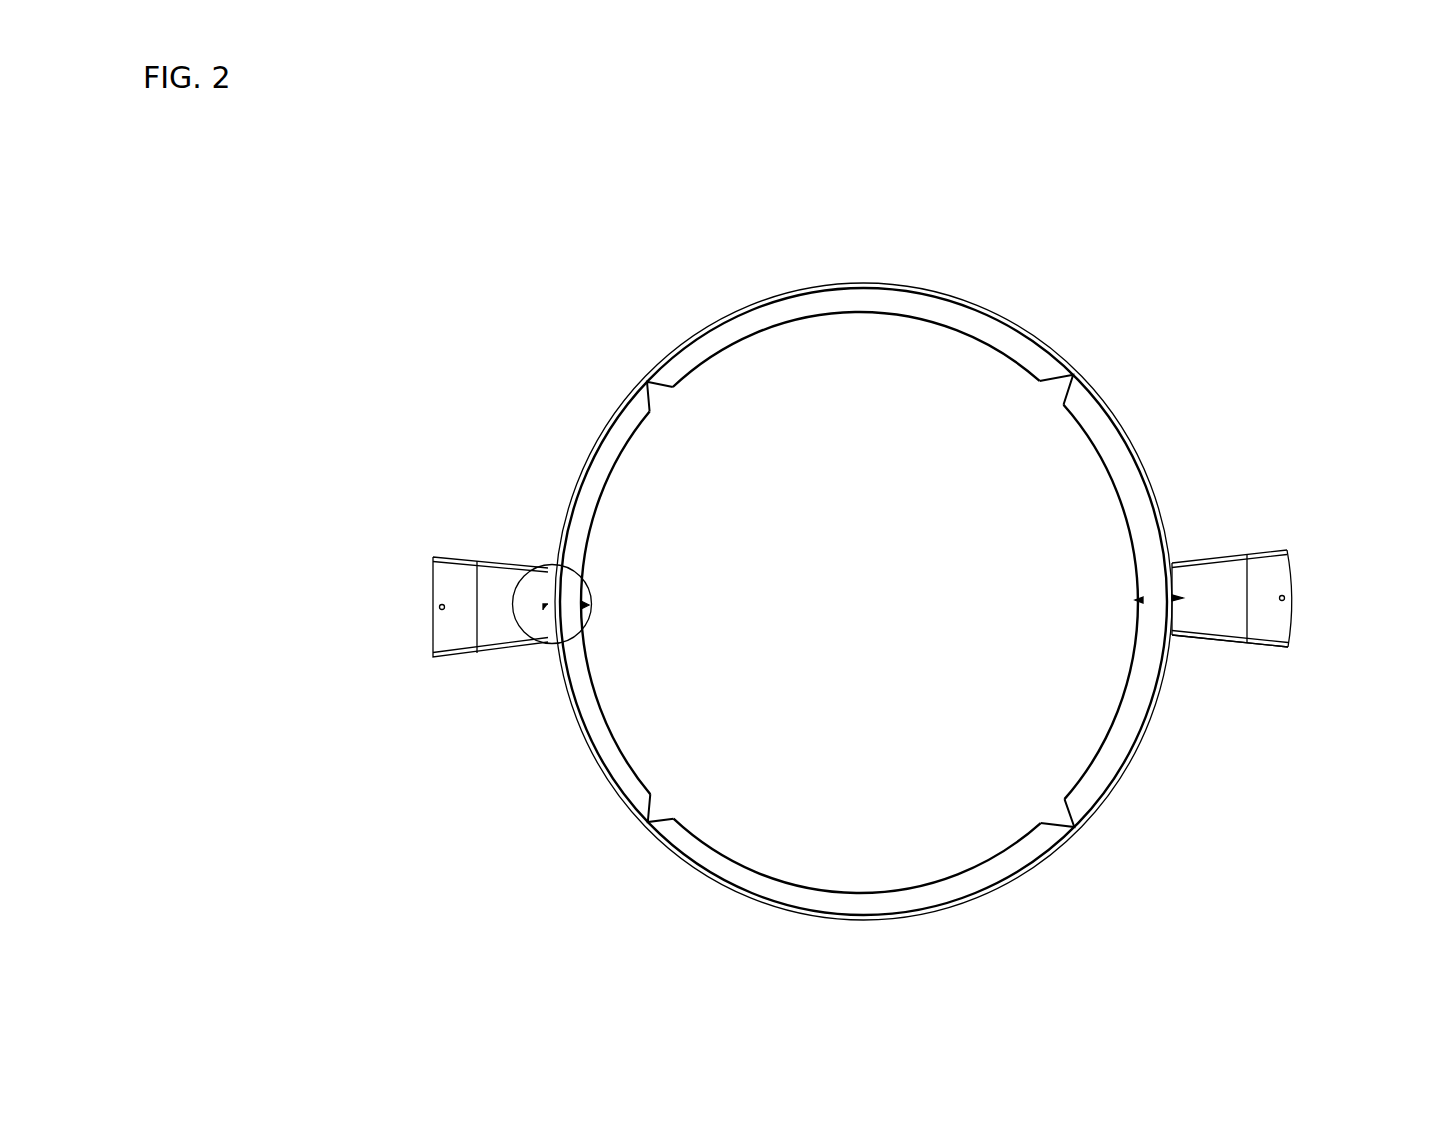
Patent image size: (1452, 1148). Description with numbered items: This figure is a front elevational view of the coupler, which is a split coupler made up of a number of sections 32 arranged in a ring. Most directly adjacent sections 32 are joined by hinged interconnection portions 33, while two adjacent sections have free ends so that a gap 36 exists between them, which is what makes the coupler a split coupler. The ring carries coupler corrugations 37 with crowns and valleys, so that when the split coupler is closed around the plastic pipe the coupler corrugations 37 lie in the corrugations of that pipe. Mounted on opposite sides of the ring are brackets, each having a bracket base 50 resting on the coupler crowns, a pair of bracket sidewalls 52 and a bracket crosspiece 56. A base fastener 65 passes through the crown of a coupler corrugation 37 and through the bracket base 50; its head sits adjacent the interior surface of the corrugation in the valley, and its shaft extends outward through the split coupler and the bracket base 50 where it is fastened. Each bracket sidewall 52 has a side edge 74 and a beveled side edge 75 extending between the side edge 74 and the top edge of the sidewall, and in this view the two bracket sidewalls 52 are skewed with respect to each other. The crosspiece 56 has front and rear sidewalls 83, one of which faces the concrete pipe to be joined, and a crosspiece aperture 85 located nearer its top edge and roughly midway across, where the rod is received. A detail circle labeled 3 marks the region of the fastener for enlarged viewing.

The detail view circle 3 is at (568, 604).
The section 32 is at (847, 293).
The hinged interconnection portion 33 is at (1075, 373).
The gap 36 is at (640, 379).
The coupler corrugation 37 is at (938, 327).
The bracket base 50 is at (1172, 537).
The bracket sidewall 52 is at (1220, 643).
The bracket crosspiece 56 is at (1295, 590).
The base fastener 65 is at (543, 607).
The side edge 74 is at (527, 565).
The beveled side edge 75 is at (485, 563).
The front and rear sidewalls 83 is at (443, 593).
The crosspiece aperture 85 is at (441, 608).